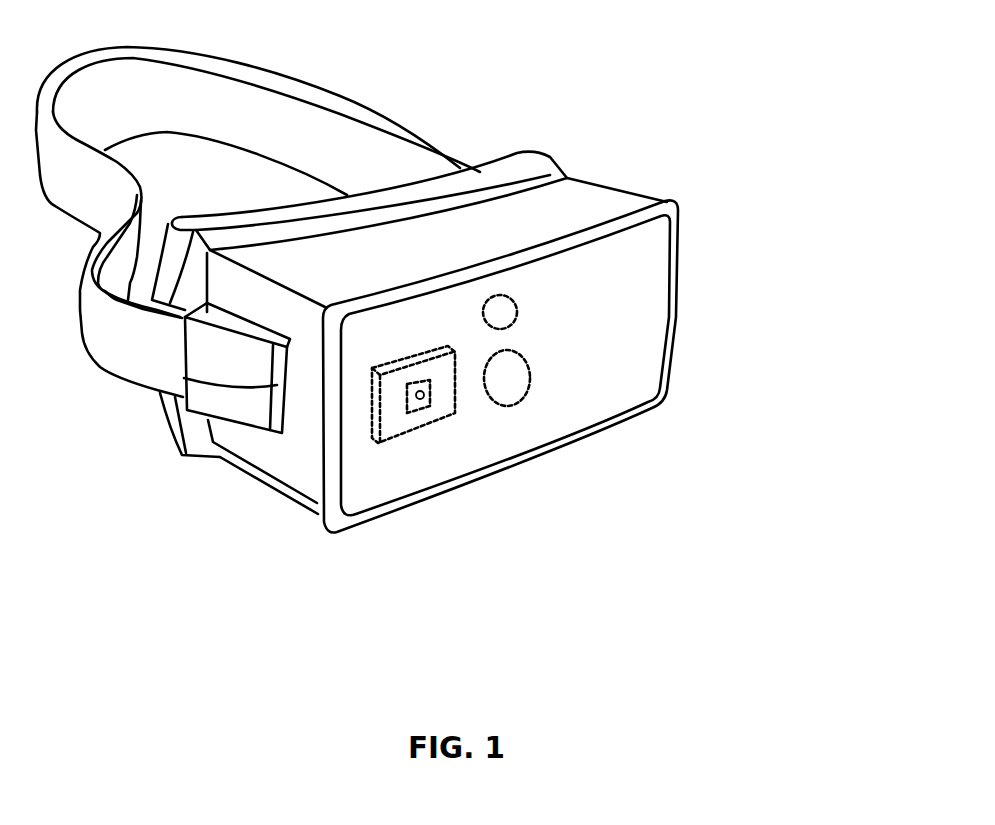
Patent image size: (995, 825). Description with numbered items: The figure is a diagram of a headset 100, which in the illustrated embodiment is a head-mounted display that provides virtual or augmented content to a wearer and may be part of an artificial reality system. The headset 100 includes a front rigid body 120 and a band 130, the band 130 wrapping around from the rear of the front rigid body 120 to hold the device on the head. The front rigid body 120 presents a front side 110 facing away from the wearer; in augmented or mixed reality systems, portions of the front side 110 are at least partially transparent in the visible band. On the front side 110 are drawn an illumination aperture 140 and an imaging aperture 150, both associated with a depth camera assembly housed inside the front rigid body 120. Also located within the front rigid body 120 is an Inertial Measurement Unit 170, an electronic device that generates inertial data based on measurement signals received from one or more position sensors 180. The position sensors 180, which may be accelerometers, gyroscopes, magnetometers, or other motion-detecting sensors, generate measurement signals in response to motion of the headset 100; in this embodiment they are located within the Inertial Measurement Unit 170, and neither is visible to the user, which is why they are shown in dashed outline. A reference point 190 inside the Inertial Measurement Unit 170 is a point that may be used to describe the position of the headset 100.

The headset 100 is at (449, 325).
The front side 110 is at (640, 320).
The front rigid body 120 is at (675, 203).
The band 130 is at (363, 120).
The illumination aperture 140 is at (517, 310).
The imaging aperture 150 is at (527, 360).
The Inertial Measurement Unit (IMU) 170 is at (456, 408).
The position sensors 180 is at (407, 390).
The reference point 190 is at (422, 407).